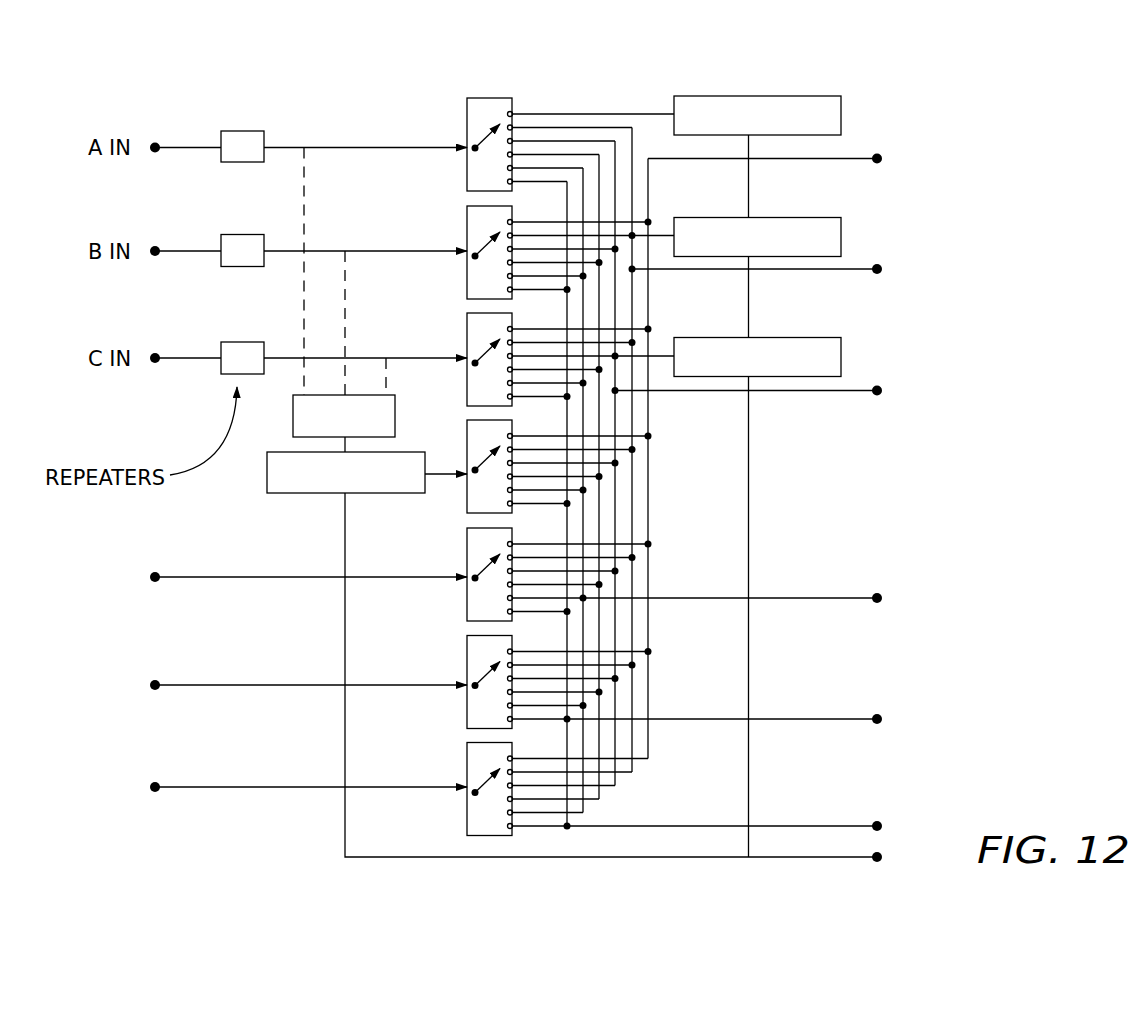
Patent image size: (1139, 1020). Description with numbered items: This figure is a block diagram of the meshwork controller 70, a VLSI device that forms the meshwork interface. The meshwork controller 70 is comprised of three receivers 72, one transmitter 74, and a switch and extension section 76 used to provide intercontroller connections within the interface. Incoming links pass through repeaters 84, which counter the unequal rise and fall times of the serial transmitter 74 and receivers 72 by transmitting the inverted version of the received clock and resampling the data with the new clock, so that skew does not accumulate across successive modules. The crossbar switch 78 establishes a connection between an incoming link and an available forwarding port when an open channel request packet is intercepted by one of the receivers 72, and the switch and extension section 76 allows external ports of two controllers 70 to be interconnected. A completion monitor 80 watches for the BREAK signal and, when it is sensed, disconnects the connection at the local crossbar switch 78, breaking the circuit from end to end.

The meshwork controller 70 is at (975, 323).
The receiver 72 is at (843, 118).
The transmitter 74 is at (322, 493).
The switch and extension section 76 is at (255, 792).
The crossbar switch 78 is at (443, 183).
The completion monitor 80 is at (293, 408).
The repeater 84 is at (242, 162).